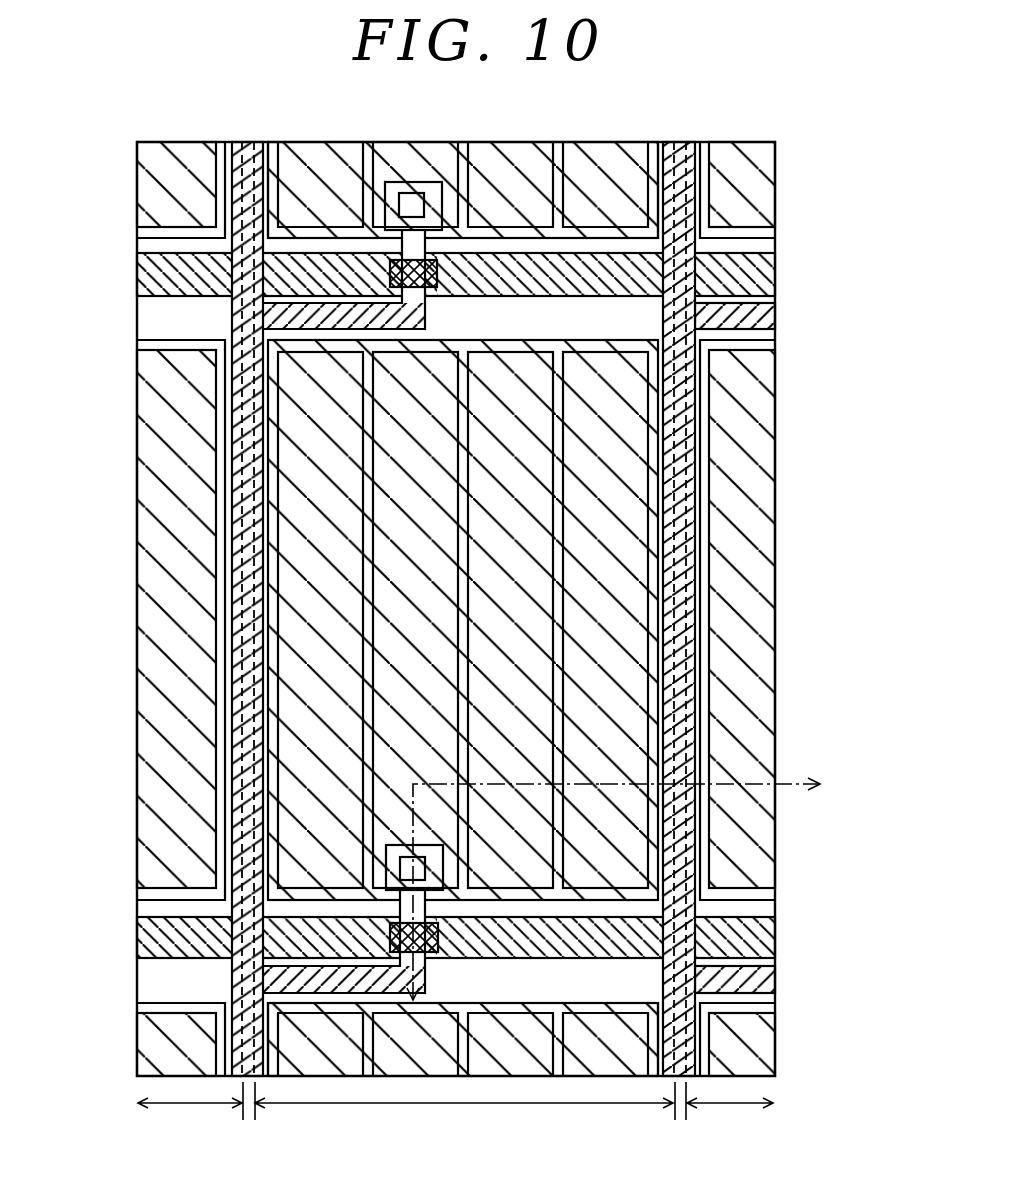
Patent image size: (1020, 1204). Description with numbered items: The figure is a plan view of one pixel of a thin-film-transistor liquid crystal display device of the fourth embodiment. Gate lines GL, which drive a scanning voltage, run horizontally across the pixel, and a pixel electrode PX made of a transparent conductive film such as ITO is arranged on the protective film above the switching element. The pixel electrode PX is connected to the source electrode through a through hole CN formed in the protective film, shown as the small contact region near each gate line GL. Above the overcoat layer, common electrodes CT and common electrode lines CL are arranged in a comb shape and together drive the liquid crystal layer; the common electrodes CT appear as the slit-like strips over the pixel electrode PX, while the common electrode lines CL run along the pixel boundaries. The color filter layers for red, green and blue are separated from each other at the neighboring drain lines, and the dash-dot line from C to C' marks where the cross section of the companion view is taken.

The pixel electrode PX is at (175, 340).
The common electrode CT is at (367, 493).
The gate line GL is at (762, 259).
The through hole CN is at (400, 867).
The common electrode line CL is at (267, 110).
The section line C is at (503, 893).
The section line C' is at (728, 785).